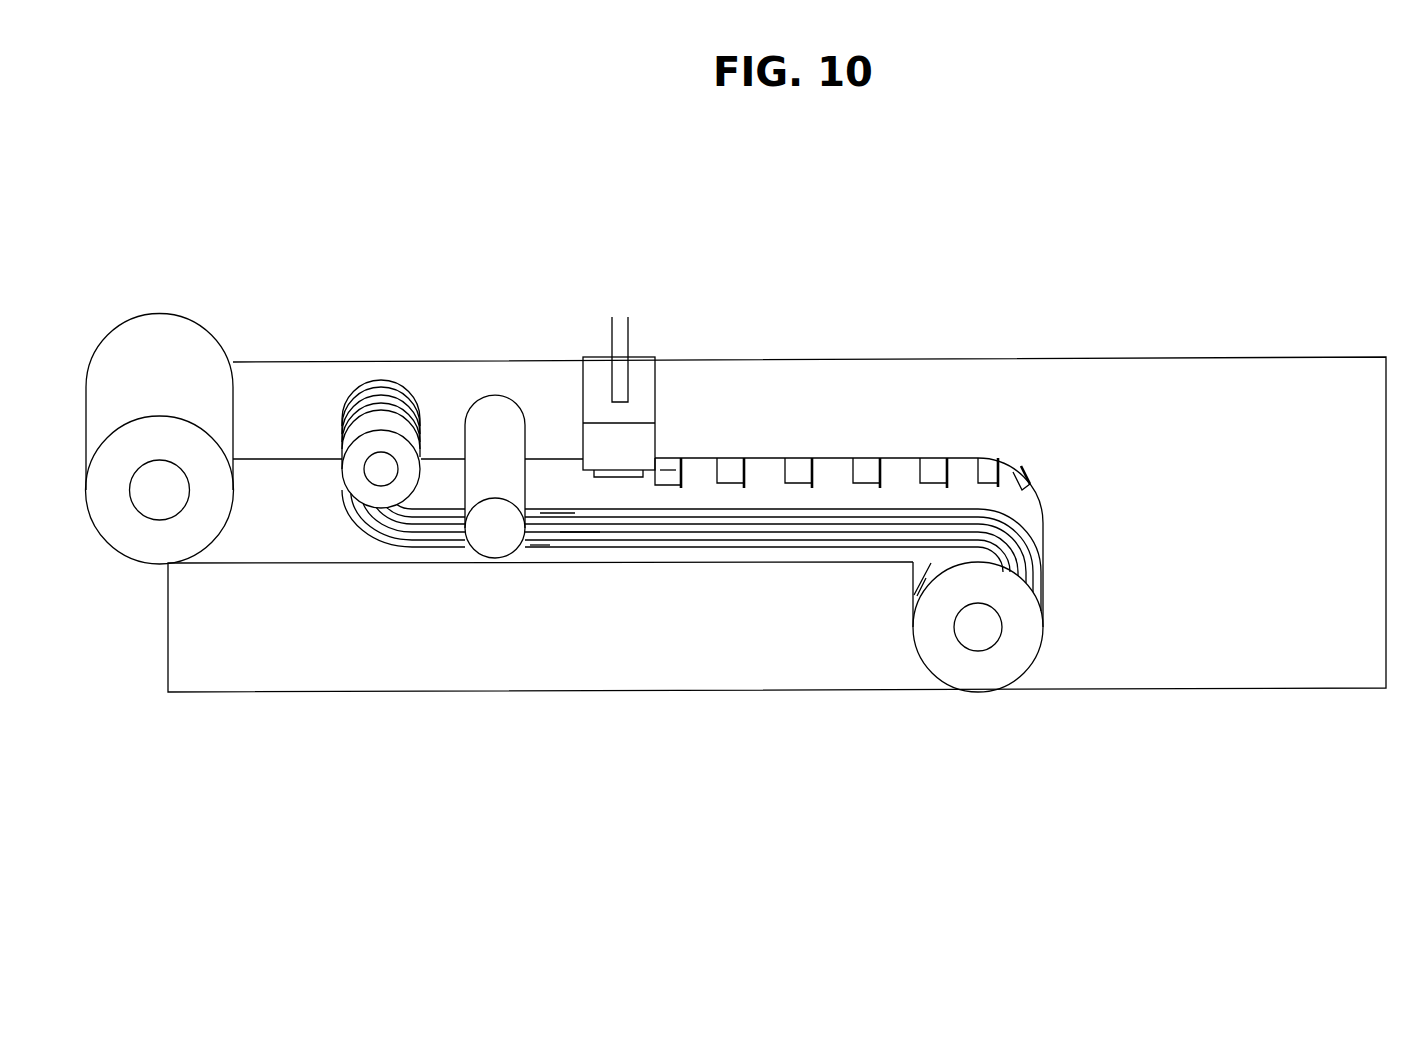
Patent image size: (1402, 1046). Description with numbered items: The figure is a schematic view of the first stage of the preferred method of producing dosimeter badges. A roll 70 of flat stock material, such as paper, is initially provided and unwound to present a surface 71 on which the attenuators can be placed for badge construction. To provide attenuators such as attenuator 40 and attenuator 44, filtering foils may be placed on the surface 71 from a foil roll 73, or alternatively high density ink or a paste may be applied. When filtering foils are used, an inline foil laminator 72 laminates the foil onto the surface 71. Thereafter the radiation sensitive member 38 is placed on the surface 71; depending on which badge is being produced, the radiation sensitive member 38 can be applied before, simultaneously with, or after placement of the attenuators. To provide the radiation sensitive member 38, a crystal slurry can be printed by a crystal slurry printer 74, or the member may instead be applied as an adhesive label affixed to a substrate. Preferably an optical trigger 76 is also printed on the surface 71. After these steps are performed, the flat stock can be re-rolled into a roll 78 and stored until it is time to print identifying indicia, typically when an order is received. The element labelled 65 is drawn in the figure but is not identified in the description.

The roll of flat stock material 70 is at (168, 367).
The surface 71 is at (292, 503).
The foil roll 73 is at (391, 447).
The attenuator 40 is at (557, 513).
The crystal slurry printer 74 is at (642, 392).
The optical trigger 76 is at (743, 470).
The inline foil laminator 72 is at (494, 473).
The attenuator 44 is at (538, 543).
The adhesive layer 65 is at (591, 562).
The radiation sensitive member 38 is at (668, 473).
The roll 78 is at (989, 673).